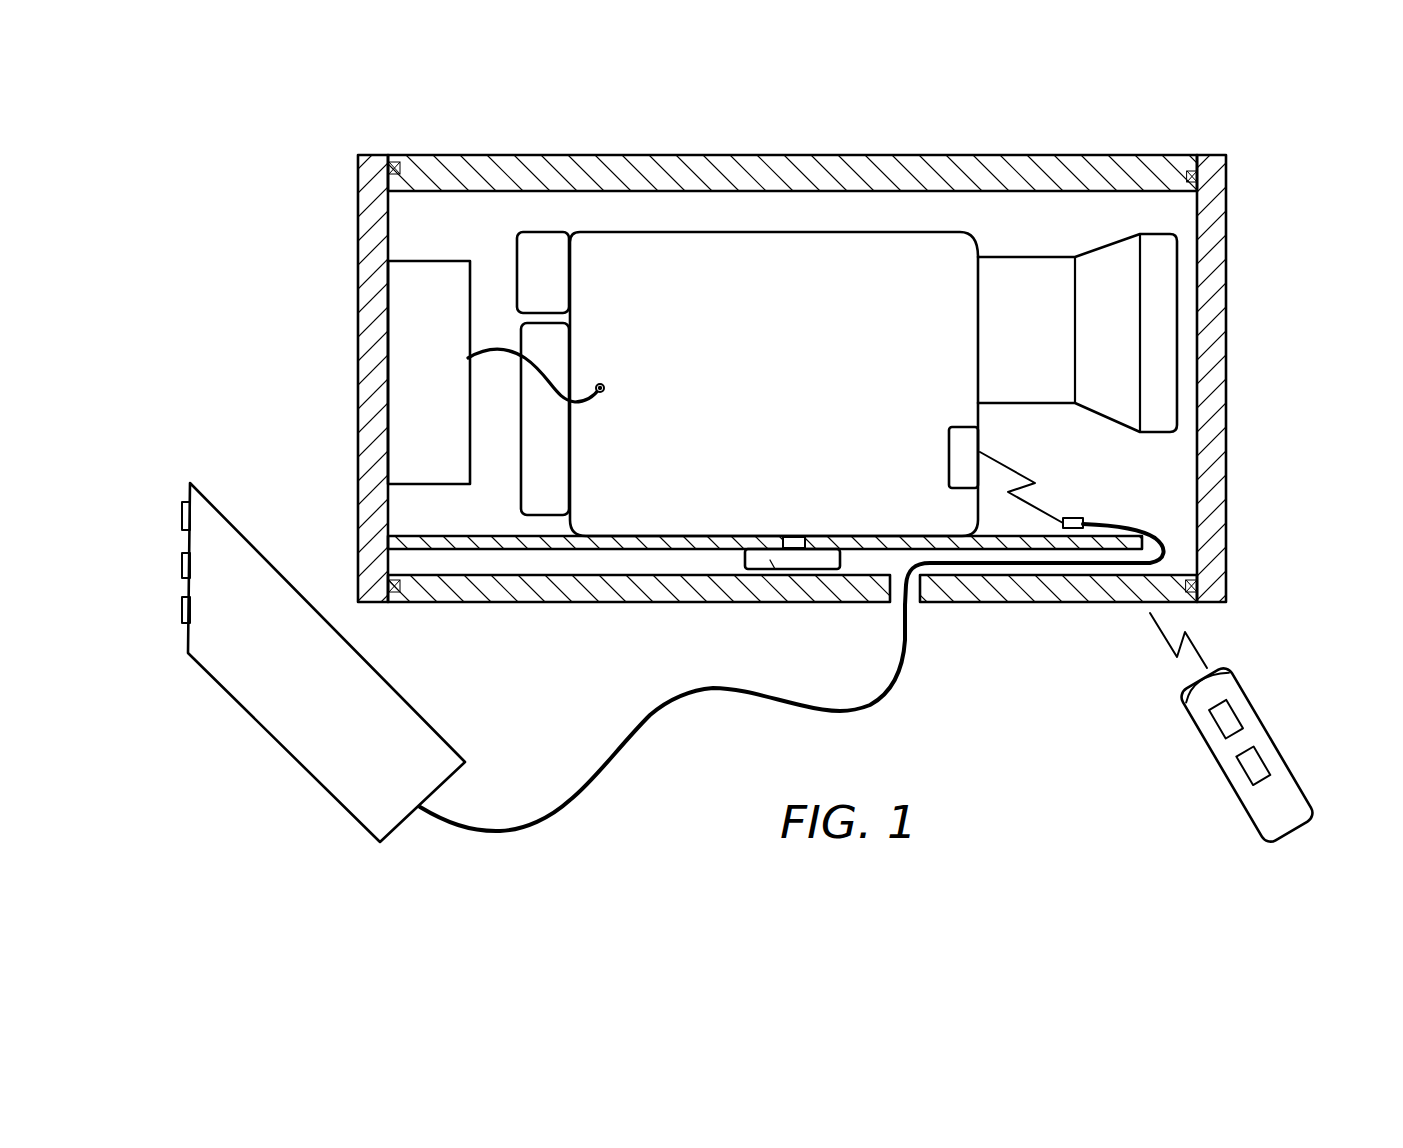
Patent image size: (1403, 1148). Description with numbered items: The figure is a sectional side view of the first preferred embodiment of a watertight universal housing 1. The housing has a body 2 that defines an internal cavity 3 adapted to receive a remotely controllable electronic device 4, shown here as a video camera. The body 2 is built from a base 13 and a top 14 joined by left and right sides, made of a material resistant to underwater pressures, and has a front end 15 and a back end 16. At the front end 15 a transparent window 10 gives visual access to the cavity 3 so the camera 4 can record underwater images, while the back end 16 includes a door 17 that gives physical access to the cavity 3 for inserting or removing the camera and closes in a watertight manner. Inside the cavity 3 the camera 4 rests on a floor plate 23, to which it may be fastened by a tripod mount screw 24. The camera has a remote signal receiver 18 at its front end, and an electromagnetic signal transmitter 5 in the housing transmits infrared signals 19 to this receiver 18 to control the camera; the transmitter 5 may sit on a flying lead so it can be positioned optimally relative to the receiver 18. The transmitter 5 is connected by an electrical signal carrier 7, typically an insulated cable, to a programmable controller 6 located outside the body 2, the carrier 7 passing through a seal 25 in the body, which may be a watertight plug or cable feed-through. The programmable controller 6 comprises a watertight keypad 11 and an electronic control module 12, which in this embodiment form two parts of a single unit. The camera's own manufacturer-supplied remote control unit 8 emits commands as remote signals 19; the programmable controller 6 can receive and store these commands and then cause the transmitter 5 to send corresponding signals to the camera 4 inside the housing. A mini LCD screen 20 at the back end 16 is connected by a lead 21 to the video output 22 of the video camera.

The watertight universal housing 1 is at (1283, 215).
The body 2 is at (1005, 622).
The internal cavity 3 is at (481, 208).
The remotely controllable electronic device 4 is at (845, 230).
The electromagnetic signal transmitter 5 is at (1085, 518).
The programmable controller 6 is at (323, 659).
The electrical signal carrier 7 is at (640, 732).
The remote control unit 8 is at (1267, 727).
The transparent window 10 is at (1215, 322).
The watertight keypad 11 is at (214, 513).
The electronic control module 12 is at (275, 700).
The base 13 is at (495, 610).
The top 14 is at (640, 155).
The front end 15 is at (1226, 250).
The back end 16 is at (357, 222).
The door 17 is at (368, 405).
The remote signal receiver 18 is at (948, 463).
The infrared signals 19 is at (1033, 462).
The mini LCD screen 20 is at (400, 322).
The lead 21 is at (505, 357).
The video output 22 is at (600, 385).
The floor plate 23 is at (425, 543).
The tripod mount screw 24 is at (772, 610).
The seal 25 is at (912, 620).